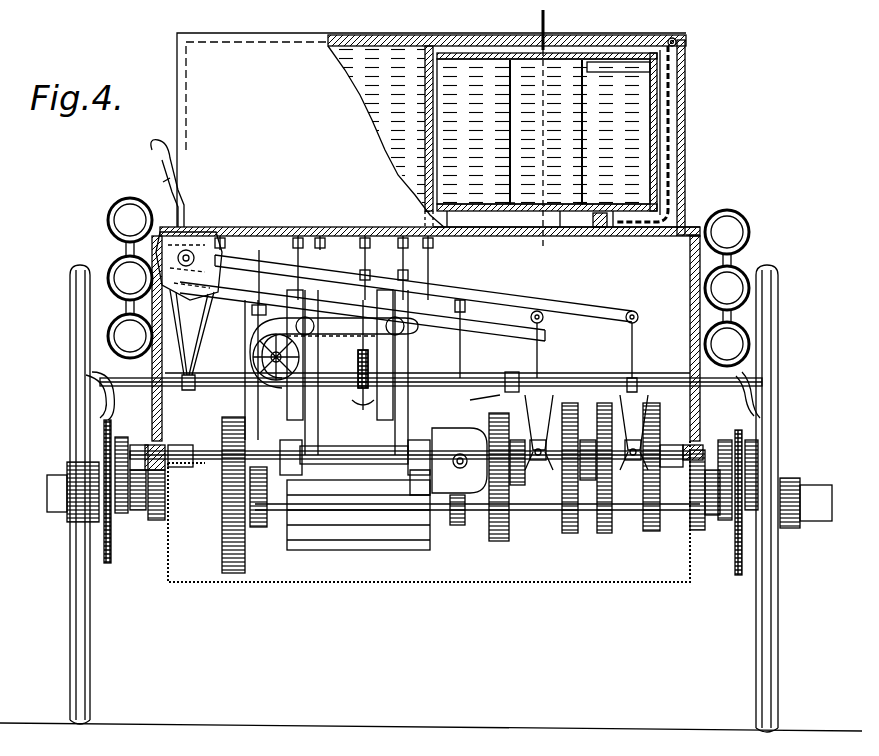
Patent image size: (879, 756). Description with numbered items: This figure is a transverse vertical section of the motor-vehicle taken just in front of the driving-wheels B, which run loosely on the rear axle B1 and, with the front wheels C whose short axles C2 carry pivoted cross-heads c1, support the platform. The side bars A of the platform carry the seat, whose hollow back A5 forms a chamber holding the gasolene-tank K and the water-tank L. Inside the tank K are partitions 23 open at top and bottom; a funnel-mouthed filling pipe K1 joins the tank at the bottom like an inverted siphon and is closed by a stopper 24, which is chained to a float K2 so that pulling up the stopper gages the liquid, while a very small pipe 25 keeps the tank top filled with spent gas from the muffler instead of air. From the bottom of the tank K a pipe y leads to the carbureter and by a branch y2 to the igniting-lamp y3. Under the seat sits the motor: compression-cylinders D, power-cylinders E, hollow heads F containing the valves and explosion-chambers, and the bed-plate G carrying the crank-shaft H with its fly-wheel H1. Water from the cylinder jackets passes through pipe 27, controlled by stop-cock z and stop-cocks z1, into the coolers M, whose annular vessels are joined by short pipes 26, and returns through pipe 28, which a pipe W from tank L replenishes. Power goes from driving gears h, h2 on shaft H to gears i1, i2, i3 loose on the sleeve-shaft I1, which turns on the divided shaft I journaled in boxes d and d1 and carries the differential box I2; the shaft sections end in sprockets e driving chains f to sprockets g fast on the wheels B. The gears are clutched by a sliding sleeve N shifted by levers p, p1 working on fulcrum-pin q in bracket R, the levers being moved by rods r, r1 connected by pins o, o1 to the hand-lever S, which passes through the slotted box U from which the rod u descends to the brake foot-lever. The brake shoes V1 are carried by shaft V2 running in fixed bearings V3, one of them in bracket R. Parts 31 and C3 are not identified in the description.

The back of the seat A5 is at (431, 130).
The water-tank L is at (386, 137).
The gasolene-tank K is at (562, 136).
The funnel-mouthed pipe K1 is at (686, 105).
The float K2 is at (608, 60).
The partitions 23 is at (535, 132).
The stopper 24 is at (676, 42).
The small pipe 25 is at (548, 30).
The stop-cock z is at (367, 236).
The stop-cocks z1 is at (430, 236).
The pipe 27 is at (152, 212).
The short pipes 26 is at (112, 256).
The cooler M is at (426, 289).
The hand-lever S is at (185, 196).
The stationary box U is at (189, 265).
The rod u is at (176, 332).
The cross-head c1 is at (203, 333).
The pipe 28 is at (208, 370).
The block 31 is at (255, 316).
The fixed bearings V3 is at (690, 375).
The rod r1 is at (575, 310).
The rod r is at (478, 322).
The lever p is at (540, 345).
The lever p1 is at (634, 345).
The power-cylinders E is at (334, 341).
The hollow castings F is at (340, 355).
The pipe y is at (380, 313).
The branch y2 is at (352, 344).
The igniting-lamp y3 is at (360, 410).
The compression-cylinders D is at (354, 372).
The front wheels C is at (261, 370).
The bracket R is at (583, 378).
The brake shaft V2 is at (445, 388).
The brake shoes V1 is at (80, 385).
The driving-wheels B is at (70, 345).
The side bars A is at (175, 462).
The rear axle B1 is at (165, 503).
The chain f is at (108, 420).
The sprocket-wheel e is at (122, 437).
The journal-boxes d is at (138, 470).
The pipe W is at (118, 515).
The sleeve N is at (162, 520).
The sprocket-wheel g is at (104, 545).
The fly-wheel H1 is at (224, 495).
The short axles C2 is at (284, 497).
The bed-plate G is at (477, 514).
The intermediate shaft I1 is at (355, 461).
The journal-box d1 is at (354, 450).
The collar C3 is at (421, 483).
The box I2 is at (459, 476).
The fulcrum-pin q is at (484, 405).
The driving-gear h is at (495, 541).
The gear i1 is at (462, 525).
The pin o1 is at (530, 432).
The pin o is at (603, 432).
The gear i2 is at (566, 533).
The gear h2 is at (585, 480).
The gear i3 is at (604, 533).
The shaft-section I is at (672, 467).
The crank-shaft H is at (518, 485).